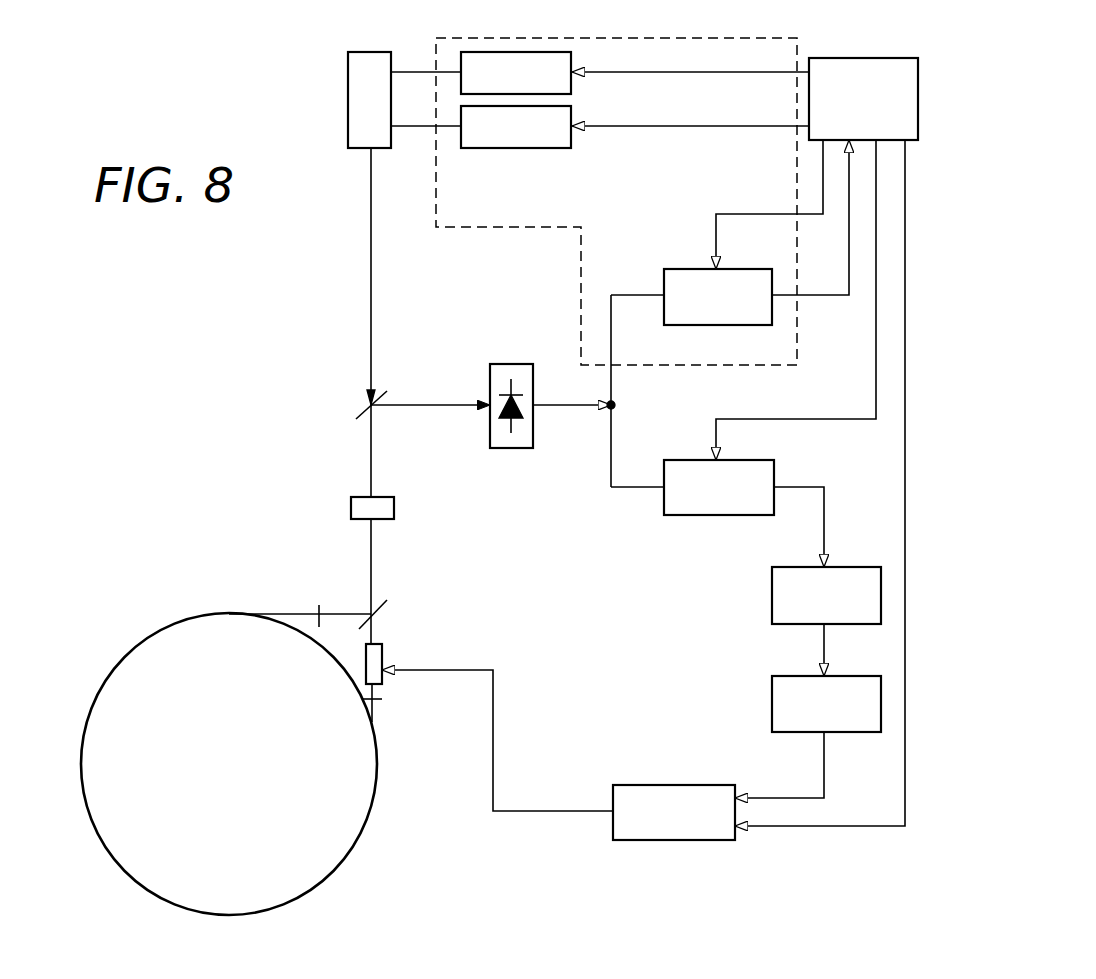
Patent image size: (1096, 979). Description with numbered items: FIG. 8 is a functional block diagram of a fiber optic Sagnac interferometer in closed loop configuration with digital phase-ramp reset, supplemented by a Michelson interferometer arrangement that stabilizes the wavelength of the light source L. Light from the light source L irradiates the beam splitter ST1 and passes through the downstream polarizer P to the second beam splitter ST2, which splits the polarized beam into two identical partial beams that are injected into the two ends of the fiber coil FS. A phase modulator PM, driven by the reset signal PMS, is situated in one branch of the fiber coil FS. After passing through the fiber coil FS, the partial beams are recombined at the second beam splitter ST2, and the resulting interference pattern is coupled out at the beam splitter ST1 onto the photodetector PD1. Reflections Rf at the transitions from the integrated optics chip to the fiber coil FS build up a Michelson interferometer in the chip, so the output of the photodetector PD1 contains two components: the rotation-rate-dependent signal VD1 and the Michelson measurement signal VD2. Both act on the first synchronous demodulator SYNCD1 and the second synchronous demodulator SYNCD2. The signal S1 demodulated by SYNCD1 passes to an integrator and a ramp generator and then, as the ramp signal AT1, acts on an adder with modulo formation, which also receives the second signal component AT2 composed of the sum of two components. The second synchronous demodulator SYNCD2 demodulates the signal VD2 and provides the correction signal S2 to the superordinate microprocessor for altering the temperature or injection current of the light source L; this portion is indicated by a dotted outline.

The light source L is at (347, 97).
The beam splitter ST1 is at (362, 403).
The photodetector PD1 is at (520, 362).
The polarizer P is at (350, 503).
The second beam splitter ST2 is at (388, 607).
The reflections Rf is at (313, 603).
The phase modulator PM is at (381, 652).
The reset signal PMS is at (492, 727).
The fiber coil FS is at (193, 647).
The measurement signal VD1 is at (610, 452).
The Michelson interferometer measurement signal VD2 is at (636, 293).
The first synchronous demodulator SYNCD1 is at (703, 513).
The second synchronous demodulator SYNCD2 is at (690, 267).
The demodulated signal S1 is at (825, 527).
The correction signal S2 is at (813, 293).
The ramp signal AT1 is at (823, 771).
The second signal component AT2 is at (818, 824).